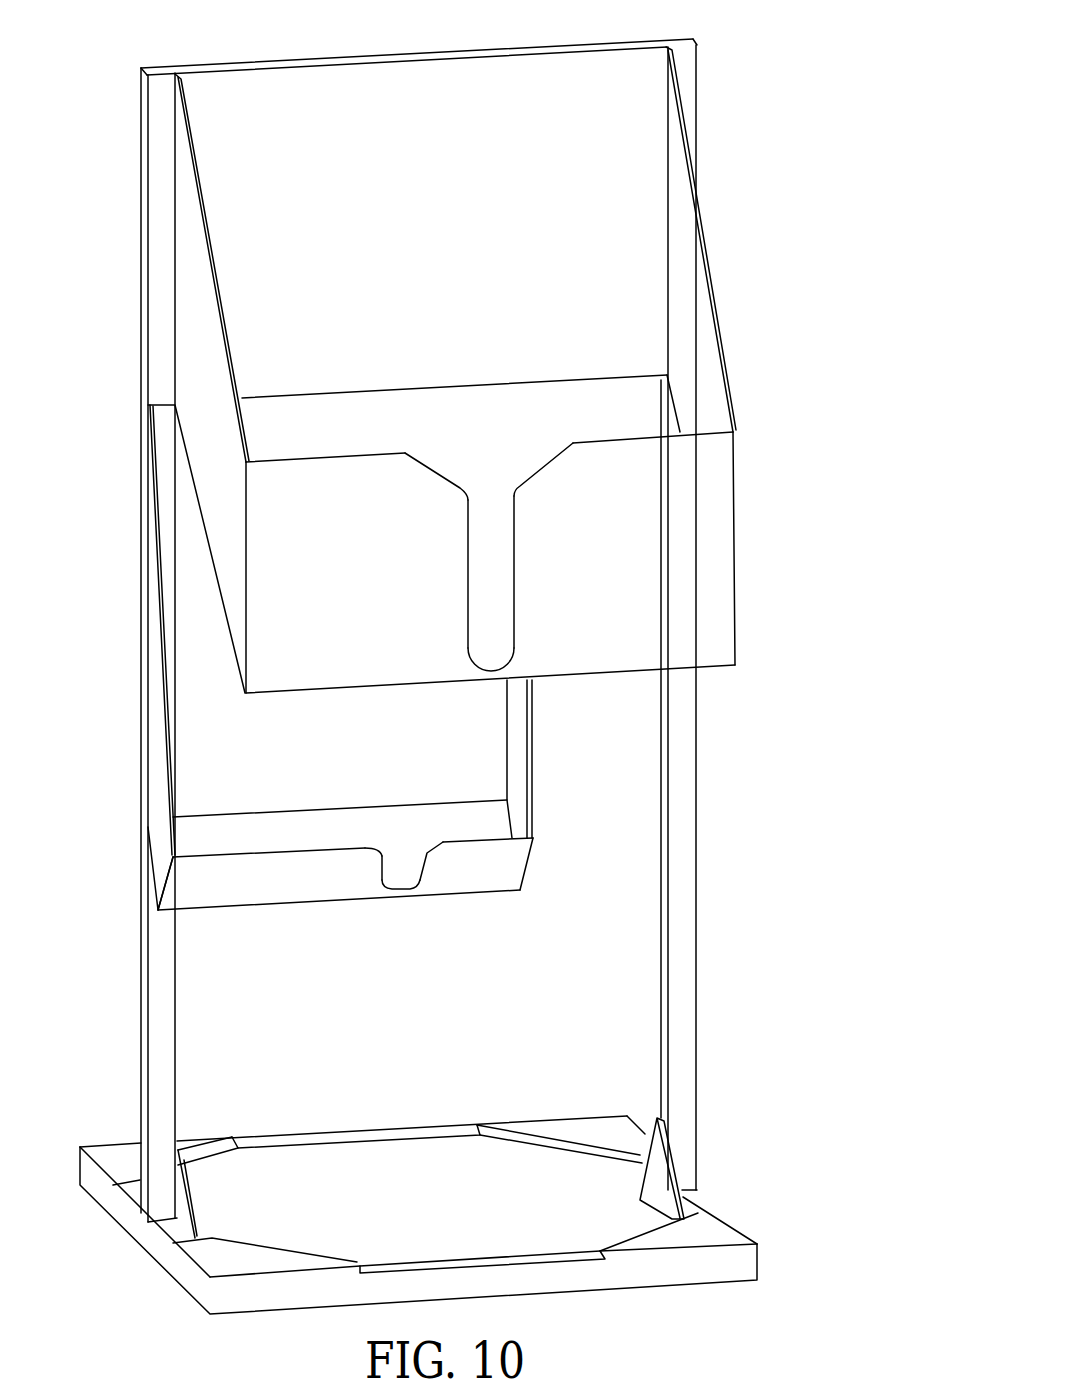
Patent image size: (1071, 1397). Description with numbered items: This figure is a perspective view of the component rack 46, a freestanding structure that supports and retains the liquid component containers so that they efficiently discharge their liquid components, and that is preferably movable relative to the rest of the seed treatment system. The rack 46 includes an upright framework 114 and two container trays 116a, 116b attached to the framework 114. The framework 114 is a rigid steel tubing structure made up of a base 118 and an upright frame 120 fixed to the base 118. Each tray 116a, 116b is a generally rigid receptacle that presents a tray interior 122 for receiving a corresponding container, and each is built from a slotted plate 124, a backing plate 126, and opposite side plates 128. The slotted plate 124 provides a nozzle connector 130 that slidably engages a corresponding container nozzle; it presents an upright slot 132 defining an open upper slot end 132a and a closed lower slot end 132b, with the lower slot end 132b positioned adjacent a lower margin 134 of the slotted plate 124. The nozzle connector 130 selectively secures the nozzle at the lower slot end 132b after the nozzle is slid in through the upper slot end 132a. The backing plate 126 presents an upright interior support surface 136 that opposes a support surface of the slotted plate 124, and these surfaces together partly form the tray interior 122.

The component rack 46 is at (757, 42).
The upright framework 114 is at (683, 792).
The base 118 is at (367, 1157).
The upright frame 120 is at (683, 897).
The tray interior 122 is at (692, 385).
The container tray 116a is at (707, 468).
The container tray 116b is at (497, 868).
The slotted plate 124 is at (683, 577).
The backing plate 126 is at (637, 192).
The side plates 128 is at (710, 262).
The nozzle connector 130 is at (371, 647).
The upright slot 132 is at (508, 583).
The upper slot end 132a is at (568, 441).
The lower slot end 132b is at (497, 667).
The lower margin 134 is at (290, 693).
The interior support surface 136 is at (587, 122).